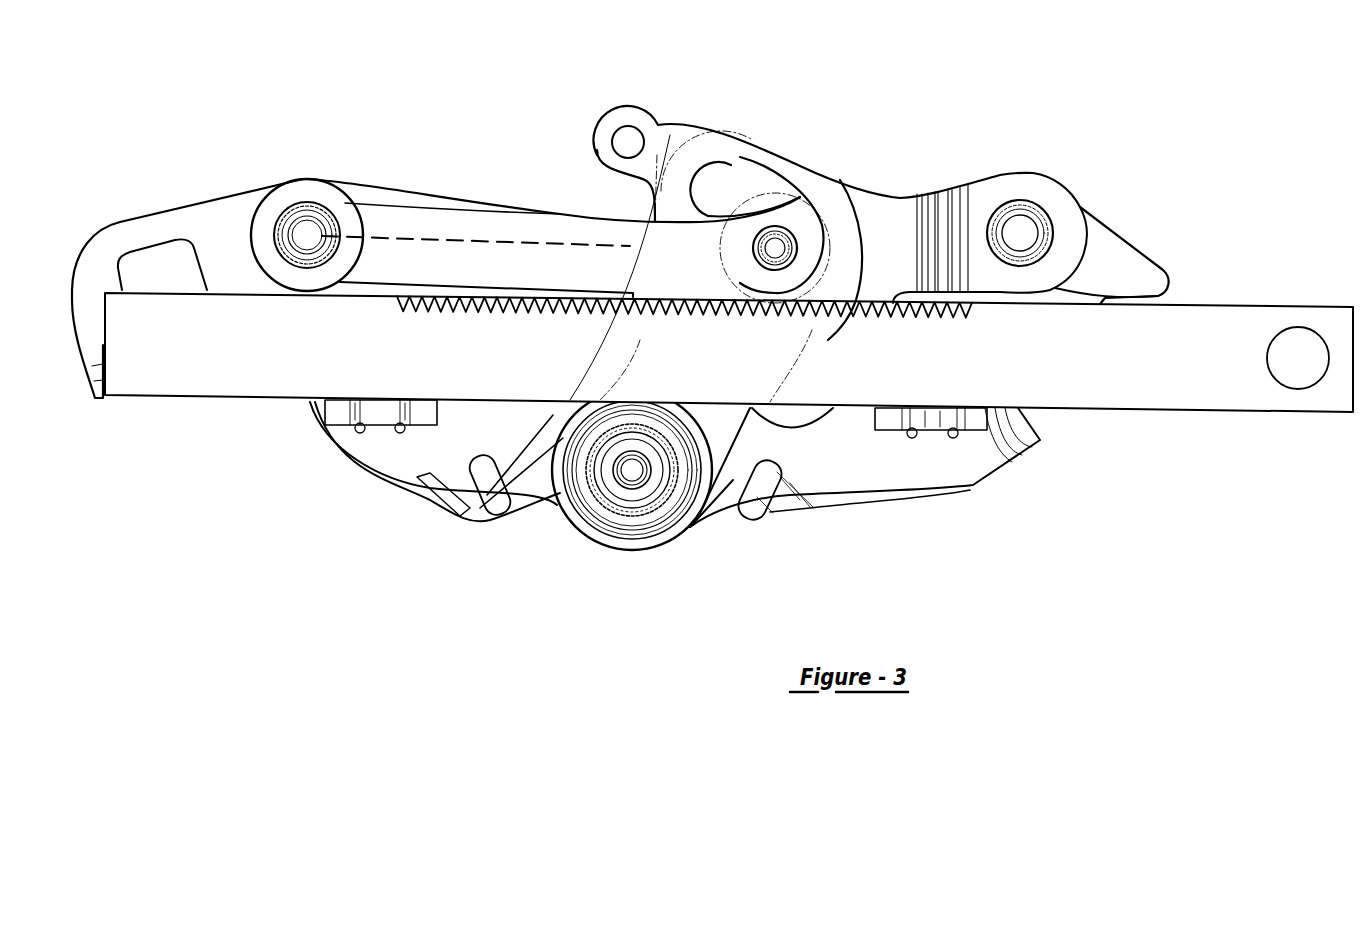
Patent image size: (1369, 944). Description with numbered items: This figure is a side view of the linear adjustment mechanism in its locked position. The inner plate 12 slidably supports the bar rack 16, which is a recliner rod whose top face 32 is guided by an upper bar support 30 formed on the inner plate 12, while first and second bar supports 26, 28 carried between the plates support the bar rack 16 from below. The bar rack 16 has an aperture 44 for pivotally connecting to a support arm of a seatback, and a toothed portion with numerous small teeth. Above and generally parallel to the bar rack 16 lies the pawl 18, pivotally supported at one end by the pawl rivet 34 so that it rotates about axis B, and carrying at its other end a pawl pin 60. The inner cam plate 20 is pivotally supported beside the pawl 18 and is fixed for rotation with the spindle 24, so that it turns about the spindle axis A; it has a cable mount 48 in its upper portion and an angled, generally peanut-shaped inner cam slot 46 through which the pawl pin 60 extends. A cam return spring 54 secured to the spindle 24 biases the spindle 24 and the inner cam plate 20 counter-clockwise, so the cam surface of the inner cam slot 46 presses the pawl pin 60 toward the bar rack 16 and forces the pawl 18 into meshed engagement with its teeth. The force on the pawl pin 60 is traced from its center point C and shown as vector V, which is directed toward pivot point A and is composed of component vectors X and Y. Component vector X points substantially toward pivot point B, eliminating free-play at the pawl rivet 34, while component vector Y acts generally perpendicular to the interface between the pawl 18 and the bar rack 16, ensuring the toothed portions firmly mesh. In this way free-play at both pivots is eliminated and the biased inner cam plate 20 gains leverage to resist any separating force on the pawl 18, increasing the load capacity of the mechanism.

The inner plate 12 is at (893, 215).
The bar rack 16 is at (228, 355).
The pawl 18 is at (485, 227).
The inner cam plate 20 is at (670, 135).
The spindle 24 is at (633, 493).
The first bar support 26 is at (933, 420).
The second bar support 28 is at (378, 415).
The upper bar support 30 is at (1167, 297).
The top face 32 is at (1265, 303).
The pawl rivet 34 is at (322, 218).
The aperture 44 is at (1292, 362).
The inner cam slot 46 is at (717, 193).
The cable mount 48 is at (628, 142).
The cam return spring 54 is at (686, 524).
The pawl pin 60 is at (840, 180).
The axis of the spindle A is at (632, 470).
The axis of the pawl rivet B is at (307, 235).
The center point of the pawl pin C is at (775, 248).
The component vector X is at (775, 248).
The component vector Y is at (775, 248).
The vector V is at (632, 470).